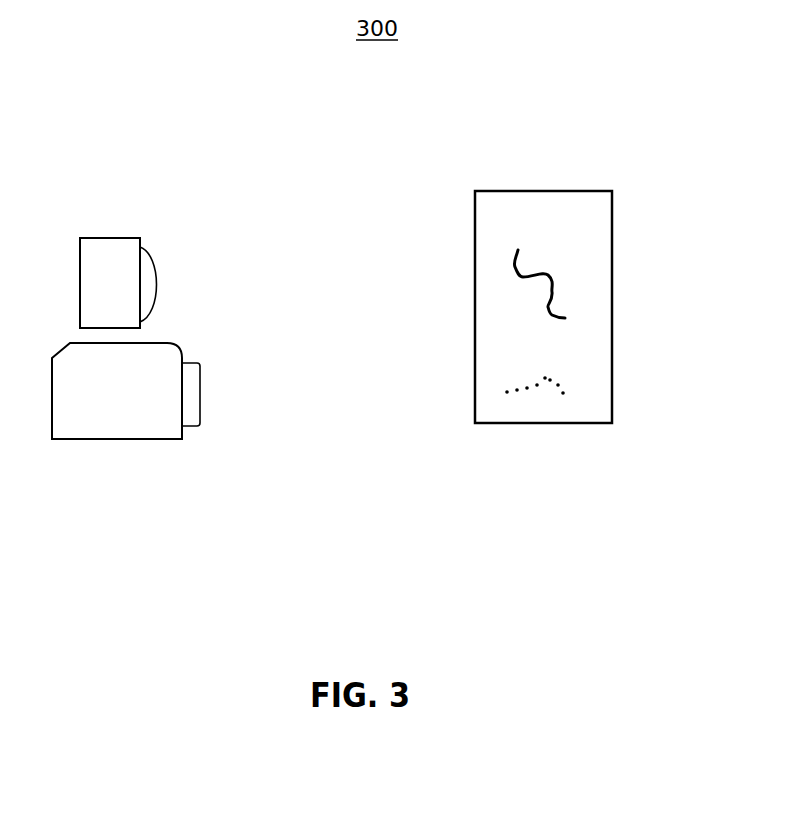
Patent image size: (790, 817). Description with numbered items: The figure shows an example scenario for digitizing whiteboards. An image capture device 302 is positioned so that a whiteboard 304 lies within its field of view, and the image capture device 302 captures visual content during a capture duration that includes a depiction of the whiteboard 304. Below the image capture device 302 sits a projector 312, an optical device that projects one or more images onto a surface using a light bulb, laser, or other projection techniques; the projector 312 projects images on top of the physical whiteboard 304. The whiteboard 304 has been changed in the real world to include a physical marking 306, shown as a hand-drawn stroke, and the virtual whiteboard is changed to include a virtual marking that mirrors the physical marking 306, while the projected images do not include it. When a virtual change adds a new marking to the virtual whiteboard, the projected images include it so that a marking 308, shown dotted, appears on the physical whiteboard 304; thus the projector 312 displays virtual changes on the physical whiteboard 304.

The image capture device 302 is at (102, 238).
The whiteboard 304 is at (515, 193).
The physical marking 306 is at (548, 308).
The marking 308 is at (558, 387).
The projector 312 is at (122, 441).